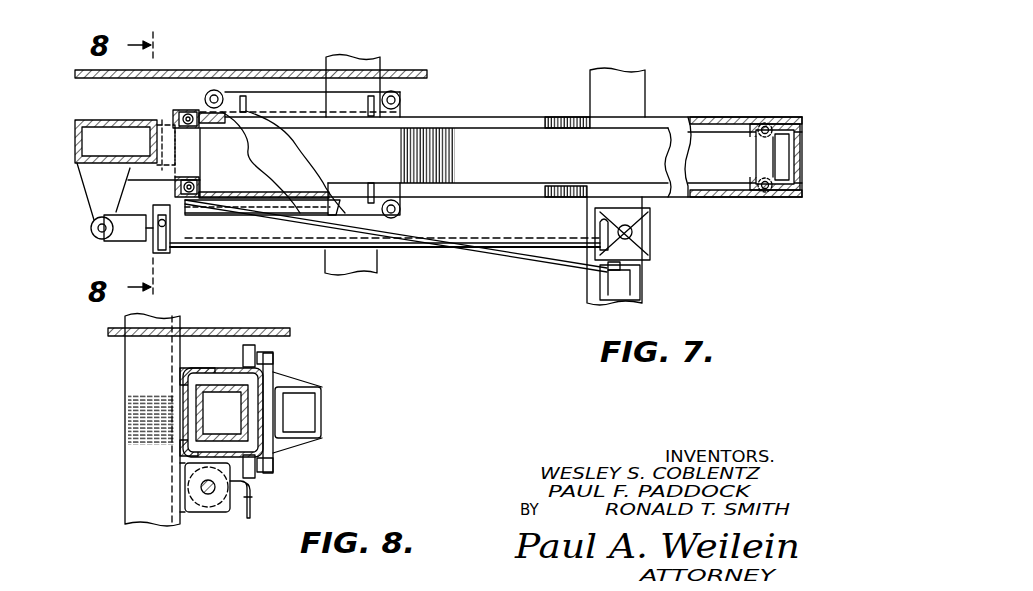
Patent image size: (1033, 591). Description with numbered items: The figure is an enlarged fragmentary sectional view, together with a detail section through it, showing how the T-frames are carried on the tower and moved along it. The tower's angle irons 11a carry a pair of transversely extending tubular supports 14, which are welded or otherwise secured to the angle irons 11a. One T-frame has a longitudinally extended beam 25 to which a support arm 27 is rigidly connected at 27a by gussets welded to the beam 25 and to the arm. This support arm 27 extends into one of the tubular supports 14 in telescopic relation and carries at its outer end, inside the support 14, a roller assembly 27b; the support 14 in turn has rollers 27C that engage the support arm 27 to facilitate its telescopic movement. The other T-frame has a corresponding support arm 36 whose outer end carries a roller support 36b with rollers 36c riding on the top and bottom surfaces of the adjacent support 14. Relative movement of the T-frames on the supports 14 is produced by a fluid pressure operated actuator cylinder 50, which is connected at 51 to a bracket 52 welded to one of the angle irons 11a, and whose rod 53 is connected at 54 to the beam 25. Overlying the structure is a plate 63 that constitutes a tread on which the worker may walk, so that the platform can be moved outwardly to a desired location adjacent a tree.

In FIG. 7, the angle irons 11a is at (640, 103).
In FIG. 8, the angle irons 11a is at (127, 405).
In FIG. 7, the tubular supports 14 is at (692, 118).
In FIG. 8, the tubular supports 14 is at (259, 384).
In FIG. 7, the beam 25 is at (76, 146).
In FIG. 7, the support arm 27 is at (724, 142).
In FIG. 8, the support arm 27 is at (246, 430).
In FIG. 7, the connection of support arm to beam 27a is at (153, 120).
In FIG. 7, the roller assembly 27b is at (750, 176).
In FIG. 7, the rollers 27C is at (184, 112).
In FIG. 8, the rollers 27C is at (210, 376).
In FIG. 7, the support arm 36 is at (505, 143).
In FIG. 8, the support arm 36 is at (322, 400).
In FIG. 8, the roller support 36b is at (290, 380).
In FIG. 8, the rollers 36c is at (250, 352).
In FIG. 7, the actuator cylinder 50 is at (292, 249).
In FIG. 8, the actuator cylinder 50 is at (196, 512).
In FIG. 7, the cylinder connection 51 is at (633, 233).
In FIG. 7, the bracket 52 is at (650, 215).
In FIG. 7, the rod 53 is at (151, 242).
In FIG. 8, the rod 53 is at (216, 492).
In FIG. 7, the rod connection 54 is at (97, 234).
In FIG. 7, the plate 63 is at (262, 72).
In FIG. 8, the plate 63 is at (124, 332).